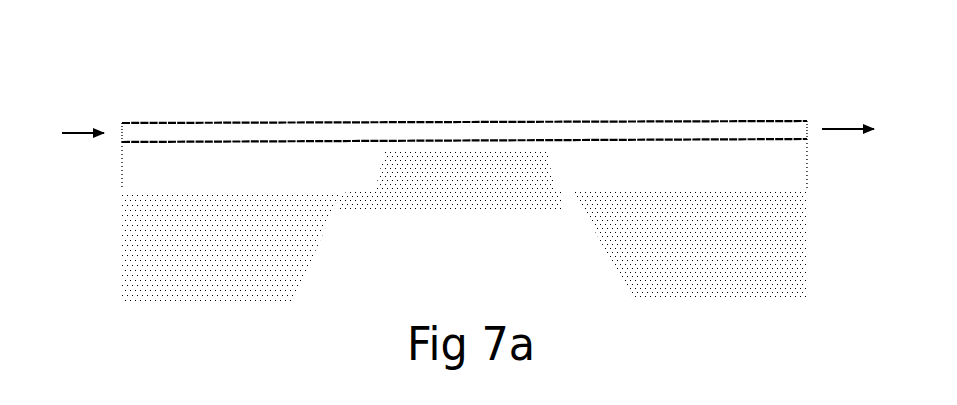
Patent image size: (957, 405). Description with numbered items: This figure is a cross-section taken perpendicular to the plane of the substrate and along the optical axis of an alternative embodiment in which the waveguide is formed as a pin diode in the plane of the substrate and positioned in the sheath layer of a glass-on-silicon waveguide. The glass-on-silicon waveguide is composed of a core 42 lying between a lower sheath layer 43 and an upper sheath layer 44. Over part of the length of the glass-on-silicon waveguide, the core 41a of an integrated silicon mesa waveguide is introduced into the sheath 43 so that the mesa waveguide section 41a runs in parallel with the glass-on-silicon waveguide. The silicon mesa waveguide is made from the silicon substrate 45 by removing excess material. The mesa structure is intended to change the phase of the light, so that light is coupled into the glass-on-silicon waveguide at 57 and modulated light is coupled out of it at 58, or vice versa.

The core of the integrated silicon mesa waveguide 41a is at (422, 175).
The core 42 is at (288, 135).
The lower sheath layer 43 is at (207, 167).
The upper sheath layer 44 is at (545, 93).
The silicon substrate 45 is at (615, 223).
The light input coupling point 57 is at (83, 111).
The light output coupling point 58 is at (848, 107).